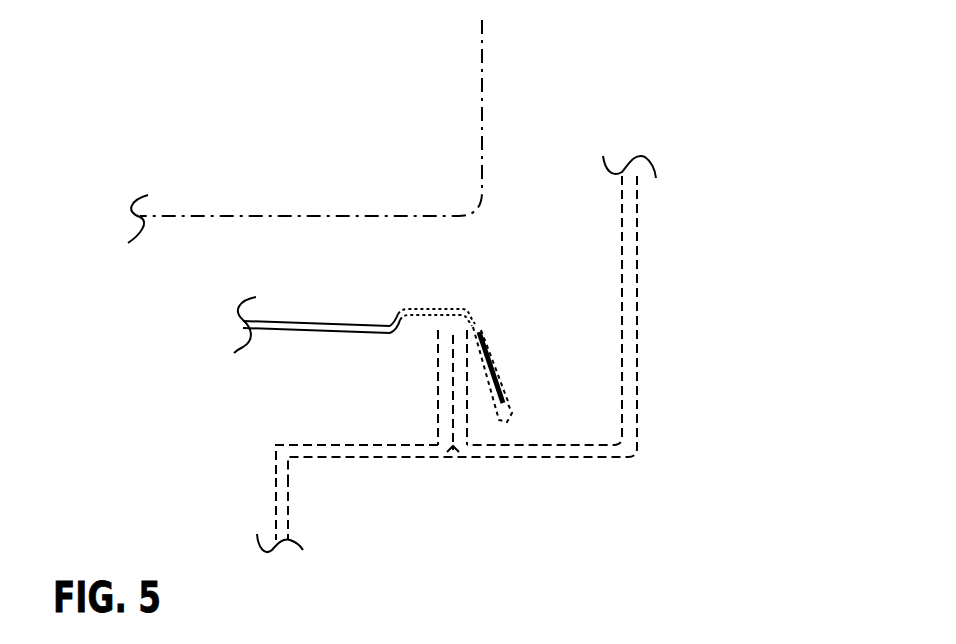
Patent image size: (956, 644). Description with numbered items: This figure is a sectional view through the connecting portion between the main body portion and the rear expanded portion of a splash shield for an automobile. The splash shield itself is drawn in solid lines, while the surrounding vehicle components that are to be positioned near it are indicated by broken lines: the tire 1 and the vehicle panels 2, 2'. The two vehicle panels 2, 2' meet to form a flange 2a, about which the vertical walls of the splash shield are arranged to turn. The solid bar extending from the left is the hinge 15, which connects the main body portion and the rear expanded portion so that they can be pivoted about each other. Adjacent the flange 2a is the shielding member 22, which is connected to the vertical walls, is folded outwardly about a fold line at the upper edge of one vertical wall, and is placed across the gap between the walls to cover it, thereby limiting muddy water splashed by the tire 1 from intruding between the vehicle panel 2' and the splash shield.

The tire 1 is at (435, 108).
The vehicle panel 2 is at (497, 317).
The vehicle panel 2' is at (206, 518).
The flange 2a is at (441, 362).
The hinge 15 is at (313, 332).
The shielding member 22 is at (502, 352).